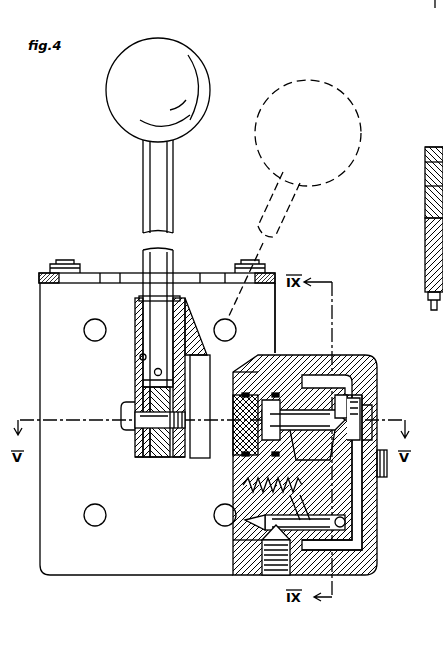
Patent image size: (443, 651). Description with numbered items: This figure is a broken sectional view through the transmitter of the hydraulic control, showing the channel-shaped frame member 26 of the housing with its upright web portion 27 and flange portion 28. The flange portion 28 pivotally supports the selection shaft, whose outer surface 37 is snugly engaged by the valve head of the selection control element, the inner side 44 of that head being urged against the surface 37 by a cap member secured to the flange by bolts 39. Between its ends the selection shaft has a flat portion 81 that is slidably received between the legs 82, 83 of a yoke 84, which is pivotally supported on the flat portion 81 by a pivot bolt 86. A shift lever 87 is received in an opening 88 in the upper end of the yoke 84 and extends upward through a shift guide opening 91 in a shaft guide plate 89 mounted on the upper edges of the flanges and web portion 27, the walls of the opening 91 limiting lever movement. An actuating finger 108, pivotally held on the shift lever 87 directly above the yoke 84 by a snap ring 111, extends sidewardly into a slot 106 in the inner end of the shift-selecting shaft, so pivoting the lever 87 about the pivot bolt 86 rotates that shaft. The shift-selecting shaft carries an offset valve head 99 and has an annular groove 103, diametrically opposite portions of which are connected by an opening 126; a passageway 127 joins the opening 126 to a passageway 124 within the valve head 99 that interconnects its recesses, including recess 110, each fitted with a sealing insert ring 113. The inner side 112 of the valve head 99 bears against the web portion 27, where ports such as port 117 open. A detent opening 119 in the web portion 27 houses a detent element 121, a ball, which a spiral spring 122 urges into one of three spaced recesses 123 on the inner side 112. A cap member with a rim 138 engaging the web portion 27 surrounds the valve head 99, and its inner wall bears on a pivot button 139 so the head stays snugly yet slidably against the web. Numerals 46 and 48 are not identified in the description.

The channel-shaped frame member 26 is at (432, 4).
The web portion 27 is at (268, 398).
The flange portion 28 is at (426, 204).
The outer surface of the flange 37 is at (426, 243).
The bolts 39 is at (437, 306).
The inner side of the valve head 44 is at (426, 186).
The layer 46 is at (442, 144).
The layer 48 is at (426, 161).
The flat portion 81 is at (160, 460).
The leg of the yoke 82 is at (140, 458).
The leg of the yoke 83 is at (174, 459).
The yoke 84 is at (135, 382).
The pivot bolt 86 is at (132, 432).
The shift lever 87 is at (150, 178).
The opening 88 is at (140, 357).
The shaft guide plate 89 is at (277, 276).
The shift guide opening 91 is at (186, 278).
The valve head 99 is at (368, 356).
The annular groove 103 is at (272, 405).
The slot 106 is at (203, 445).
The actuating finger 108 is at (205, 340).
The recess 110 is at (340, 515).
The snap ring 111 is at (139, 298).
The inner side of the valve head 112 is at (337, 438).
The sealing insert rings 113 is at (290, 548).
The port 117 is at (265, 562).
The detent opening 119 is at (262, 523).
The detent element 121 is at (300, 500).
The spiral spring 122 is at (246, 485).
The spaced recesses 123 is at (388, 463).
The passageway 124 is at (358, 540).
The opening 126 is at (270, 394).
The passageway 127 is at (341, 395).
The rim 138 is at (380, 376).
The pivot button 139 is at (372, 415).